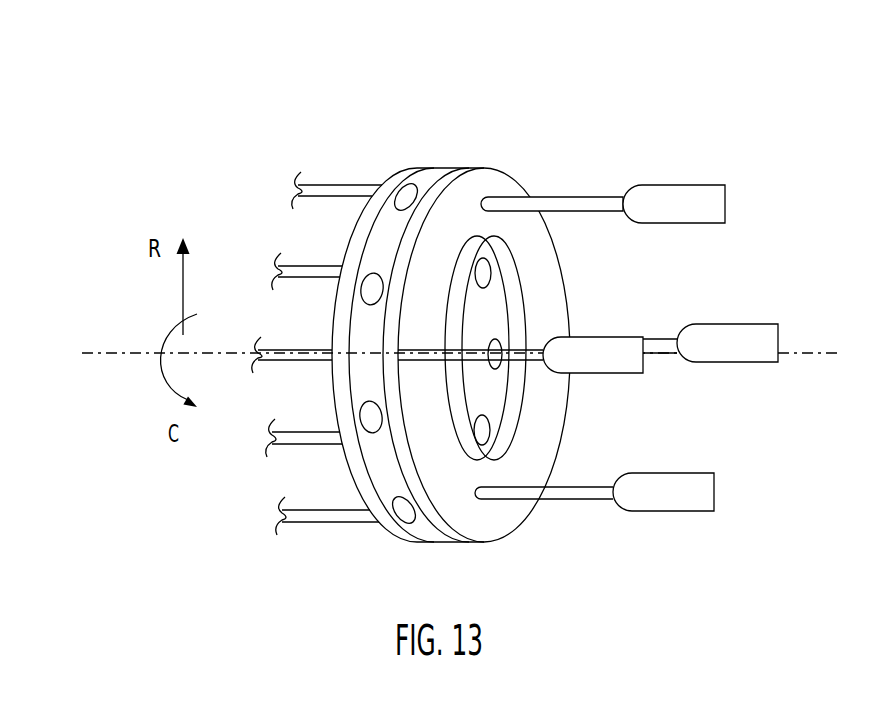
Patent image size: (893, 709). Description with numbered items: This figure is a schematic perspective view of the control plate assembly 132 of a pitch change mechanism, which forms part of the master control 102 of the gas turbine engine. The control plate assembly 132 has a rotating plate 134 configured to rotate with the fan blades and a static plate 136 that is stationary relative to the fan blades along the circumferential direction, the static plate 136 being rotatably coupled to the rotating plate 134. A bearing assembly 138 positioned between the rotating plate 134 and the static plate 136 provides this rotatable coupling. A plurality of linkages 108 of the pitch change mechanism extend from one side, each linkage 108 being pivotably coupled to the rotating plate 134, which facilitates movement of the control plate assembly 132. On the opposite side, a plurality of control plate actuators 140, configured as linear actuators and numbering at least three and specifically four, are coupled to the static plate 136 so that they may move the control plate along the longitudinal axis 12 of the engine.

The longitudinal axis 12 is at (128, 353).
The master control 102 is at (477, 323).
The control plate assembly 132 is at (477, 323).
The rotating plate 134 is at (398, 180).
The static plate 136 is at (517, 181).
The bearing assembly 138 is at (432, 545).
The linkages 108 is at (334, 184).
The control plate actuators 140 is at (663, 184).